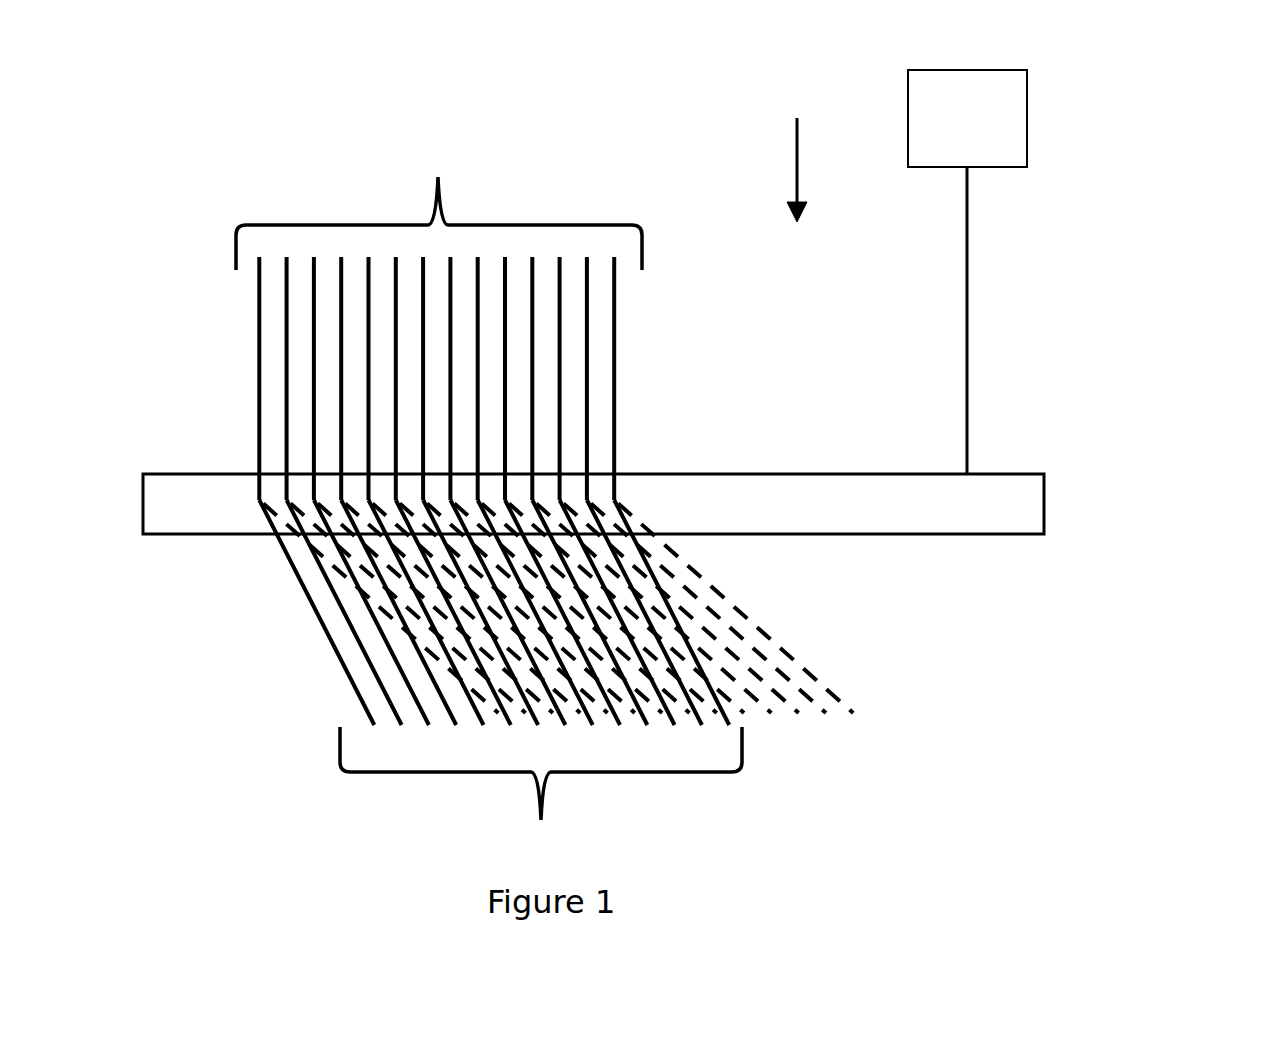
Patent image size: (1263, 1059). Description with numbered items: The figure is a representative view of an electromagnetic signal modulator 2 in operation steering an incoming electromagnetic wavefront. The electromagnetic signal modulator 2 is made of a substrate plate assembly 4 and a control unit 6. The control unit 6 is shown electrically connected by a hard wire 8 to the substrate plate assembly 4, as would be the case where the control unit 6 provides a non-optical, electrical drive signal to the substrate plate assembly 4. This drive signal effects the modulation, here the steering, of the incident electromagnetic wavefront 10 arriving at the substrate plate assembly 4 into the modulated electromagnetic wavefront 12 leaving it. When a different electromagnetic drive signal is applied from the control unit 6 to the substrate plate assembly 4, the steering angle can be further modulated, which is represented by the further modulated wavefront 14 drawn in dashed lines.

The electromagnetic signal modulator 2 is at (797, 148).
The substrate plate assembly 4 is at (1045, 482).
The control unit 6 is at (1027, 118).
The hard wire 8 is at (967, 227).
The incident electromagnetic wavefront 10 is at (438, 155).
The modulated electromagnetic wavefront 12 is at (523, 835).
The further modulated wavefront 14 is at (848, 694).